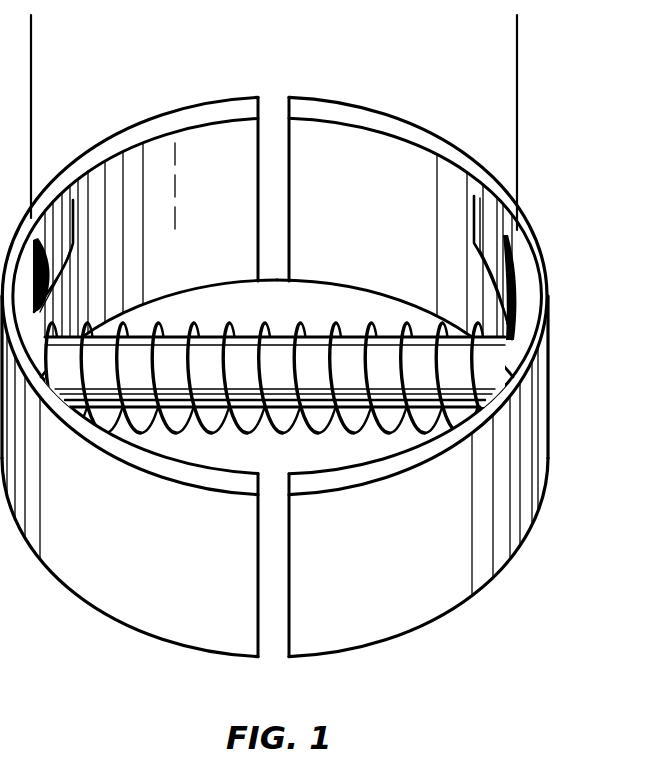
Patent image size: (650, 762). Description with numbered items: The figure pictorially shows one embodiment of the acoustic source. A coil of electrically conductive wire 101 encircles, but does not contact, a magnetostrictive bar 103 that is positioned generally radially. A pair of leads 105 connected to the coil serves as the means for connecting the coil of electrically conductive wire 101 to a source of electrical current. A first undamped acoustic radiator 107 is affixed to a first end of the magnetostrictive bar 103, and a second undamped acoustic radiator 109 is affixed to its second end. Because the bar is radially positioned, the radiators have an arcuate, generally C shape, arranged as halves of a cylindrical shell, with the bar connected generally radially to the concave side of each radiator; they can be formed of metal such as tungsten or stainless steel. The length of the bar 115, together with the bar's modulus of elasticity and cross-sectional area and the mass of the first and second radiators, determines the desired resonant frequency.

The coil of electrically conductive wire 101 is at (472, 381).
The magnetostrictive bar 103 is at (505, 343).
The leads 105 is at (73, 207).
The first undamped acoustic radiator 107 is at (366, 141).
The second undamped acoustic radiator 109 is at (222, 133).
The length of the bar 115 is at (517, 37).